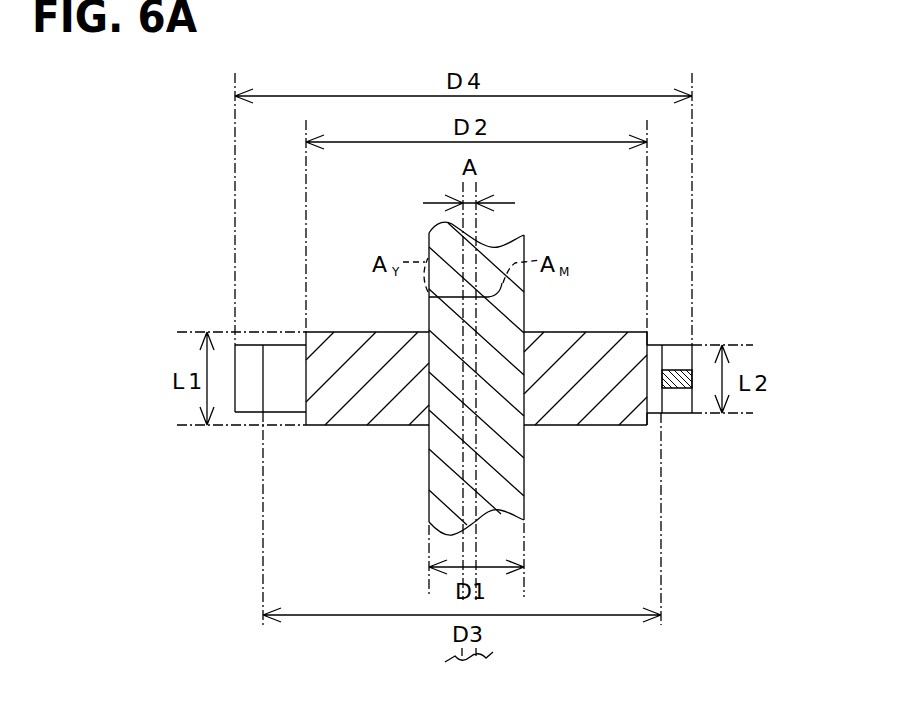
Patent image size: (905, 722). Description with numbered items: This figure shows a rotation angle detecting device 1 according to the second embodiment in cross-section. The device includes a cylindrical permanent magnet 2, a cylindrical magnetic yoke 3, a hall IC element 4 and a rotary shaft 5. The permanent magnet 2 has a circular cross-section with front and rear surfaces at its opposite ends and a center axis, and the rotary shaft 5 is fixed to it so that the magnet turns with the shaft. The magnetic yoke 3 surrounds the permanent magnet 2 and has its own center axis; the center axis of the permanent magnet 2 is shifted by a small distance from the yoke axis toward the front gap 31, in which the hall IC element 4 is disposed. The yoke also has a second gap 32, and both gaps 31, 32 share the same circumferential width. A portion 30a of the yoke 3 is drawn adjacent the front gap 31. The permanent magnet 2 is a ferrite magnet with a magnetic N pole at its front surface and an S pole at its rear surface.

The rotation angle detecting device 1 is at (725, 237).
The permanent magnet 2 is at (393, 340).
The magnetic yoke 3 is at (288, 352).
The hall IC element 4 is at (660, 382).
The rotary shaft 5 is at (445, 247).
The right boss portion 30a is at (655, 343).
The front gap 31 is at (672, 400).
The gap 32 is at (252, 392).